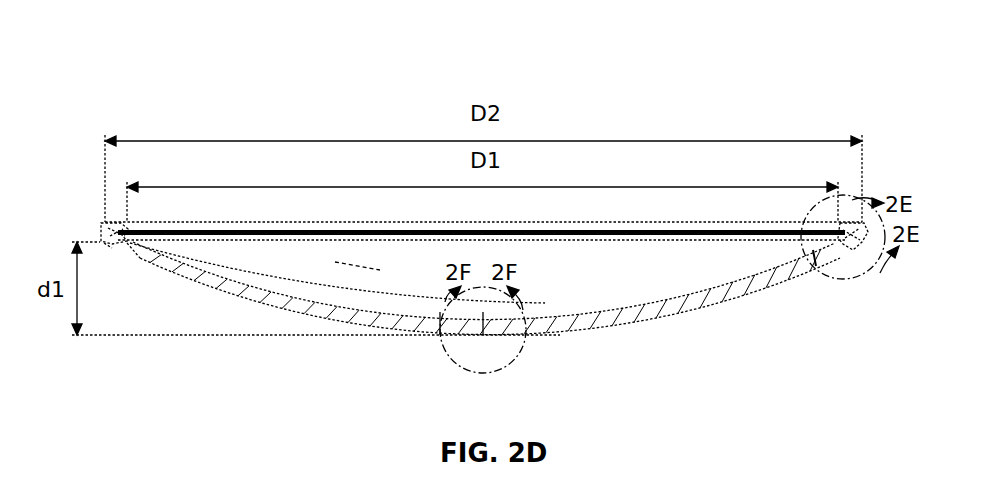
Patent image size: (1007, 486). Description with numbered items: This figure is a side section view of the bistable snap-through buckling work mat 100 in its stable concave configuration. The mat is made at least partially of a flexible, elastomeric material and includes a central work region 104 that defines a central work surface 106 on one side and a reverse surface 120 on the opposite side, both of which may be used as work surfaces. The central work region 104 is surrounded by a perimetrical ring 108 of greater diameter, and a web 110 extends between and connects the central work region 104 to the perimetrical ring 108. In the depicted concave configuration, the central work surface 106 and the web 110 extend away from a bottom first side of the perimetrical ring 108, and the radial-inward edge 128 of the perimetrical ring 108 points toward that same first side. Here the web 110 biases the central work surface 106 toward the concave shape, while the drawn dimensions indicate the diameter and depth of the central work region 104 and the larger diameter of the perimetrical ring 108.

The bistable snap-through buckling work mat 100 is at (765, 80).
The central work region 104 is at (578, 321).
The central work surface 106 is at (601, 289).
The perimetrical ring 108 is at (102, 224).
The web 110 is at (126, 244).
The reverse surface 120 is at (670, 313).
The radial-inward edge 128 is at (107, 245).